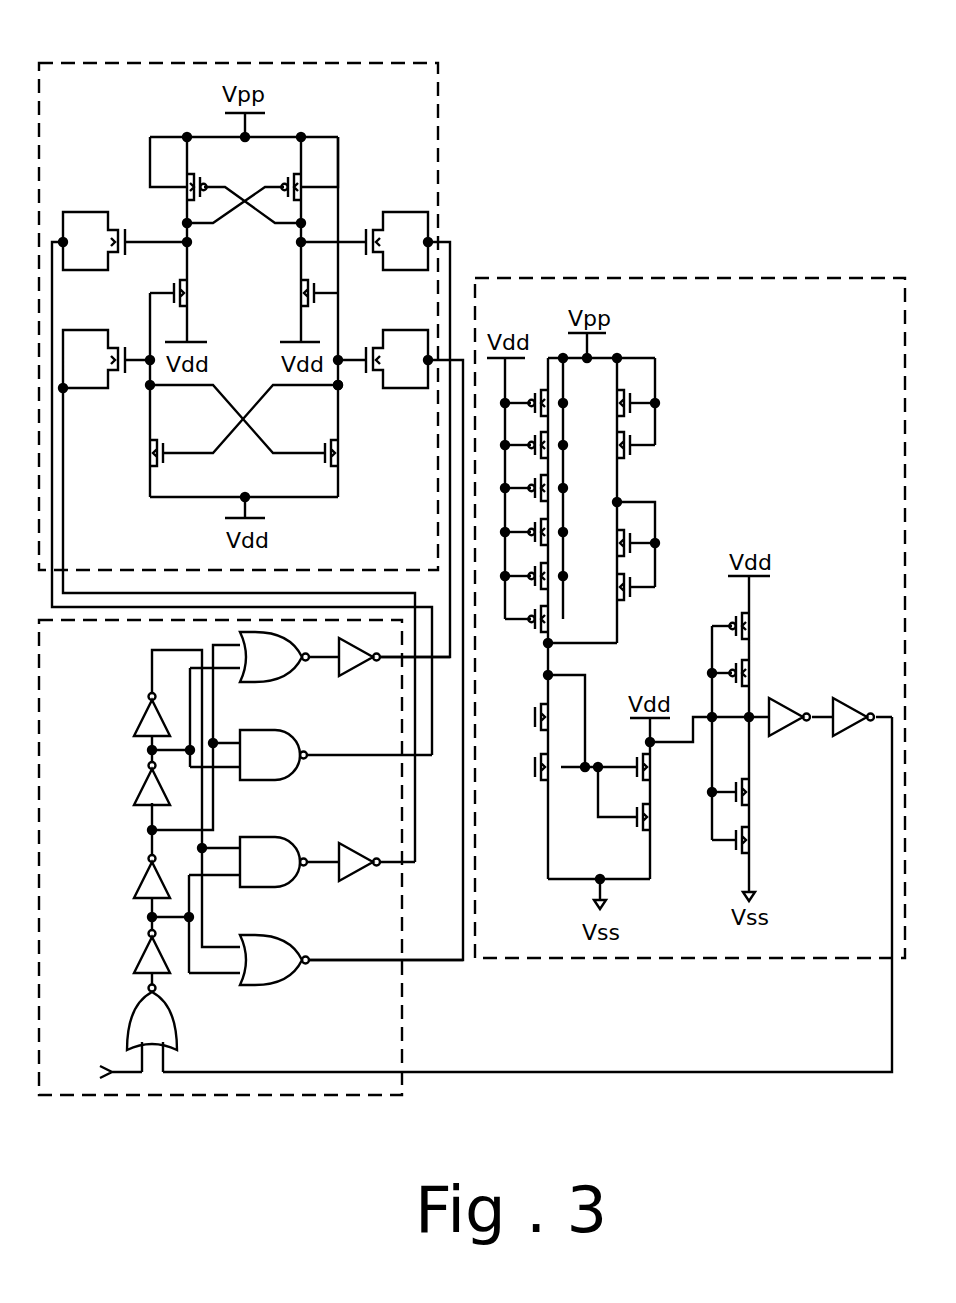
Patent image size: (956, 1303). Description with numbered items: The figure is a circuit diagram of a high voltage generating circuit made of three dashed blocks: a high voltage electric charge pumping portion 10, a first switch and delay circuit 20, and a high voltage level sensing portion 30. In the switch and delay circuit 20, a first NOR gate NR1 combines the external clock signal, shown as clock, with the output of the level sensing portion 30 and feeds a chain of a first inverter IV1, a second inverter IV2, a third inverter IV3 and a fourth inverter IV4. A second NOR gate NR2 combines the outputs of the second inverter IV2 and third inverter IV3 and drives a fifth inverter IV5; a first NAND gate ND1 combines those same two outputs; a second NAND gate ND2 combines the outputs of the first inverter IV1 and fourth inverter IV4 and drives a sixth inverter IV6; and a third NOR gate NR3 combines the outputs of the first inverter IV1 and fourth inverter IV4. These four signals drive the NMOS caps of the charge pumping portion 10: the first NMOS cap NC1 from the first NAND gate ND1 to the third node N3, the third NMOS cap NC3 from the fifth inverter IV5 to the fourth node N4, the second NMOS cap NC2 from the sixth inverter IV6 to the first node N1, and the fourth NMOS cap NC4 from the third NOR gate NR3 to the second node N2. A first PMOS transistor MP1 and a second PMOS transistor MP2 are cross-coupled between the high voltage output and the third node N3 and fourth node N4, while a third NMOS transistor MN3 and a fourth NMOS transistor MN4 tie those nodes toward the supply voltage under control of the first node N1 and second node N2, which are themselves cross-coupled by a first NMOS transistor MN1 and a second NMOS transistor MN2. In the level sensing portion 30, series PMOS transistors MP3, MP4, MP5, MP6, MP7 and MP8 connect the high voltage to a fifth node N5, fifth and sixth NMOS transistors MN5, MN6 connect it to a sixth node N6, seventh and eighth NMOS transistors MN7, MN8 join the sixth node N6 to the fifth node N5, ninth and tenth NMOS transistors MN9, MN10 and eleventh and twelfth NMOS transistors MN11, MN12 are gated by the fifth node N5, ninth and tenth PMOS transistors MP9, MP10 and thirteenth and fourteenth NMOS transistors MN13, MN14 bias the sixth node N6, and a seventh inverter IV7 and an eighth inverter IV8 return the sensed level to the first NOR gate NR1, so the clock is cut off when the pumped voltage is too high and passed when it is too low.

The high voltage electric charge pumping portion 10 is at (125, 60).
The first switch and delay circuit 20 is at (405, 1003).
The high voltage level sensing portion 30 is at (745, 276).
The first PMOS transistor MP1 is at (225, 180).
The second PMOS transistor MP2 is at (262, 180).
The first NMOS transistor MN1 is at (134, 453).
The second NMOS transistor MN2 is at (359, 453).
The third NMOS transistor MN3 is at (196, 295).
The fourth NMOS transistor MN4 is at (295, 295).
The first NMOS cap NC1 is at (242, 483).
The second NMOS cap NC2 is at (237, 596).
The third NMOS cap NC3 is at (375, 434).
The fourth NMOS cap NC4 is at (385, 645).
The first node N1 is at (158, 387).
The second node N2 is at (333, 387).
The third node N3 is at (170, 245).
The fourth node N4 is at (305, 245).
The fifth node N5 is at (552, 672).
The sixth node N6 is at (620, 500).
The first inverter IV1 is at (132, 951).
The second inverter IV2 is at (132, 876).
The third inverter IV3 is at (132, 783).
The fourth inverter IV4 is at (132, 714).
The fifth inverter IV5 is at (359, 671).
The sixth inverter IV6 is at (359, 876).
The seventh inverter IV7 is at (789, 736).
The eighth inverter IV8 is at (853, 736).
The first NOR gate NR1 is at (179, 1018).
The second NOR gate NR2 is at (274, 668).
The third NOR gate NR3 is at (274, 971).
The first NAND gate ND1 is at (273, 767).
The second NAND gate ND2 is at (273, 873).
The third PMOS transistor MP3 is at (560, 403).
The fourth PMOS transistor MP4 is at (560, 445).
The fifth PMOS transistor MP5 is at (560, 488).
The sixth PMOS transistor MP6 is at (560, 532).
The seventh PMOS transistor MP7 is at (560, 576).
The eighth PMOS transistor MP8 is at (560, 619).
The ninth PMOS transistor MP9 is at (757, 625).
The tenth PMOS transistor MP10 is at (764, 673).
The fifth NMOS transistor MN5 is at (663, 403).
The sixth NMOS transistor MN6 is at (663, 445).
The seventh NMOS transistor MN7 is at (664, 543).
The eighth NMOS transistor MN8 is at (664, 587).
The ninth NMOS transistor MN9 is at (520, 717).
The tenth NMOS transistor MN10 is at (561, 767).
The eleventh NMOS transistor MN11 is at (678, 767).
The twelfth NMOS transistor MN12 is at (659, 799).
The thirteenth NMOS transistor MN13 is at (766, 792).
The fourteenth NMOS transistor MN14 is at (766, 840).
The external clock signal clock is at (95, 1075).